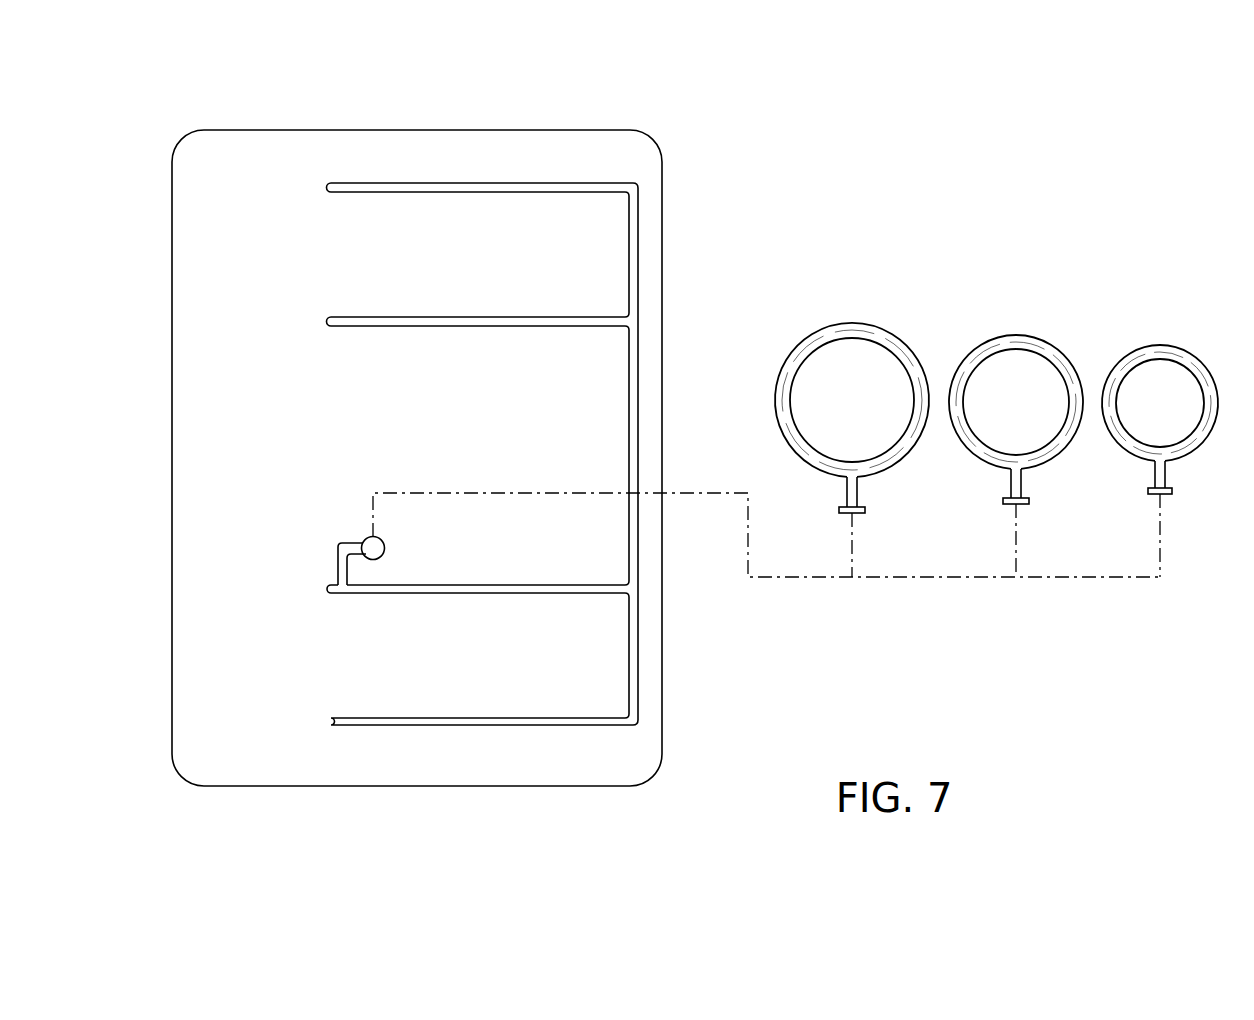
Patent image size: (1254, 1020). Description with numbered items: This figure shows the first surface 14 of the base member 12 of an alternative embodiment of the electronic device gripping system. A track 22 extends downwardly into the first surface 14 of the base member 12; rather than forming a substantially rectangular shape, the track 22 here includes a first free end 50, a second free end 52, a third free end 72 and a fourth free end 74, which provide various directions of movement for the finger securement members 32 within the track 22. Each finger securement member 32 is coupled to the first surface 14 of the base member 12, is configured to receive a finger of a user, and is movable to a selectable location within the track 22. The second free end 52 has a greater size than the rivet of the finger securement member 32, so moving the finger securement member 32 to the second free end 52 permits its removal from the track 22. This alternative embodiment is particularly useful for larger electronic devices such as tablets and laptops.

The base member 12 is at (205, 130).
The first surface 14 is at (211, 203).
The track 22 is at (370, 183).
The fourth free end 74 is at (327, 187).
The third free end 72 is at (327, 322).
The first free end 50 is at (327, 722).
The second free end 52 is at (384, 548).
The finger securement member 32 is at (1158, 345).